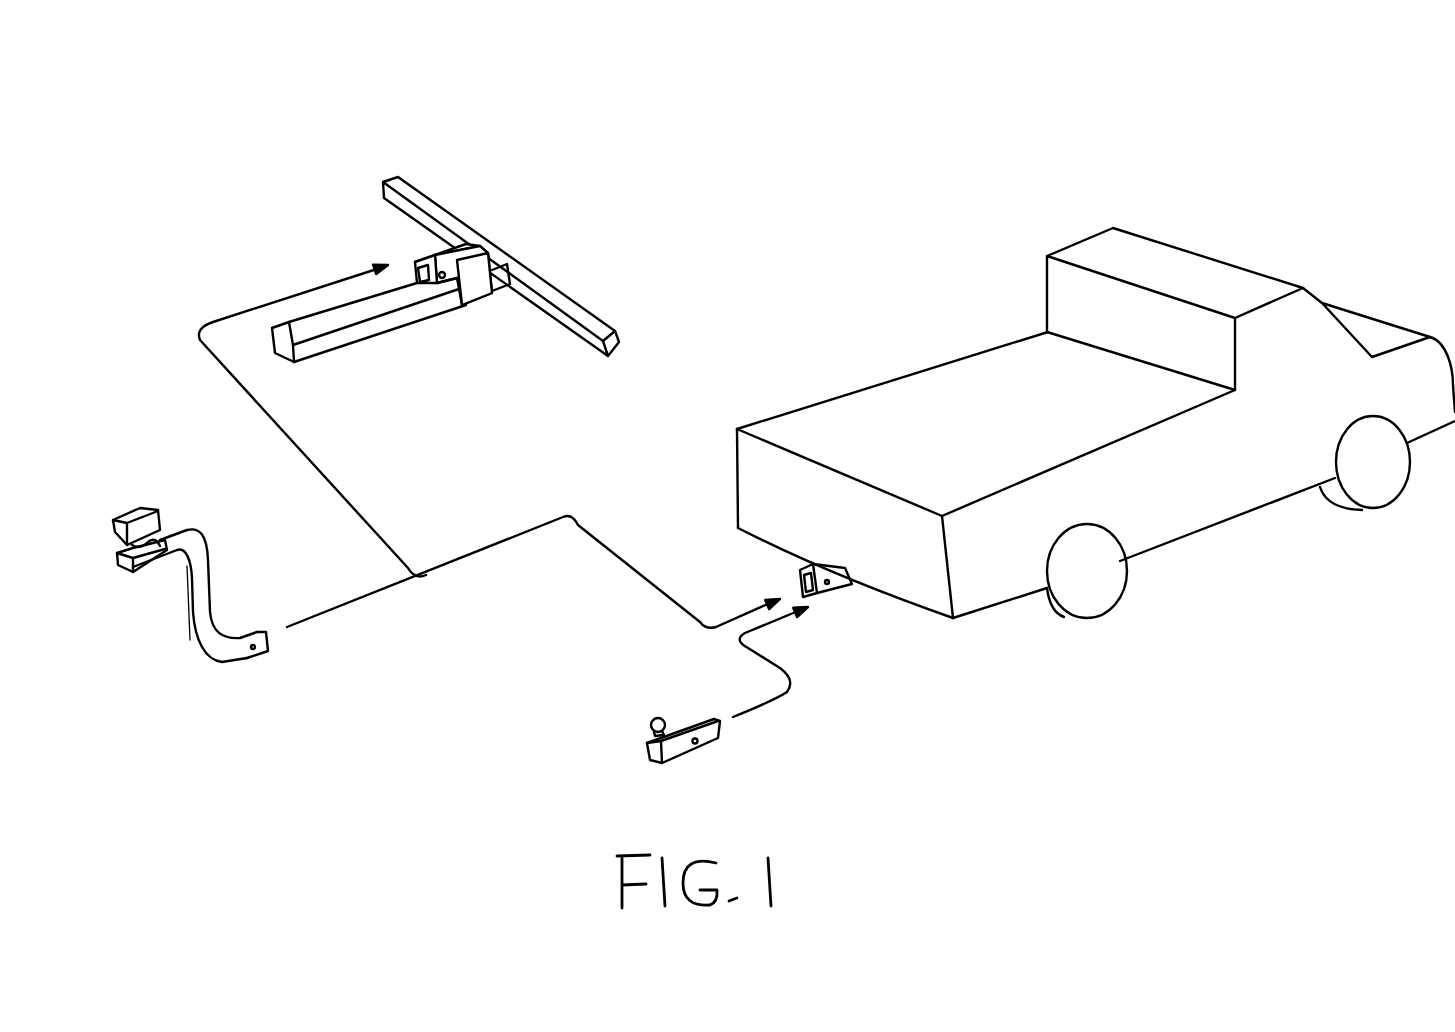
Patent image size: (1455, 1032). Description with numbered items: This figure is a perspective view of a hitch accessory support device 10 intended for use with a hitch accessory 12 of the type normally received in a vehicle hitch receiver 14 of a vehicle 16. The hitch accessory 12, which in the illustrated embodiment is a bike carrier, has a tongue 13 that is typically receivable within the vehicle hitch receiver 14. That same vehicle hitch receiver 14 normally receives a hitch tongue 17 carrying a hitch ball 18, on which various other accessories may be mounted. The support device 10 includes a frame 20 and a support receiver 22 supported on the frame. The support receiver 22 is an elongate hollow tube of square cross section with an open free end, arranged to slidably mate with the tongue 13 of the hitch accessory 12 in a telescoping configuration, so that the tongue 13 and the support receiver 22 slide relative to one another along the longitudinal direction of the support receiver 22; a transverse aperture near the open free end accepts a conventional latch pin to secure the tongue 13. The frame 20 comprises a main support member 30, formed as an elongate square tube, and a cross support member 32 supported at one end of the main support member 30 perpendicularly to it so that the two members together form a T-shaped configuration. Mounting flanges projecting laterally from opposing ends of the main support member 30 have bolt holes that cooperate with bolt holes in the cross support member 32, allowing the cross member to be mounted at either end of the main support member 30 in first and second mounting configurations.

The hitch accessory support device 10 is at (357, 114).
The hitch accessory 12 is at (192, 604).
The tongue 13 is at (245, 655).
The vehicle hitch receiver 14 is at (850, 580).
The vehicle 16 is at (988, 382).
The hitch tongue 17 is at (707, 745).
The hitch ball 18 is at (650, 727).
The frame 20 is at (438, 328).
The support receiver 22 is at (433, 262).
The main support member 30 is at (325, 338).
The cross support member 32 is at (552, 290).